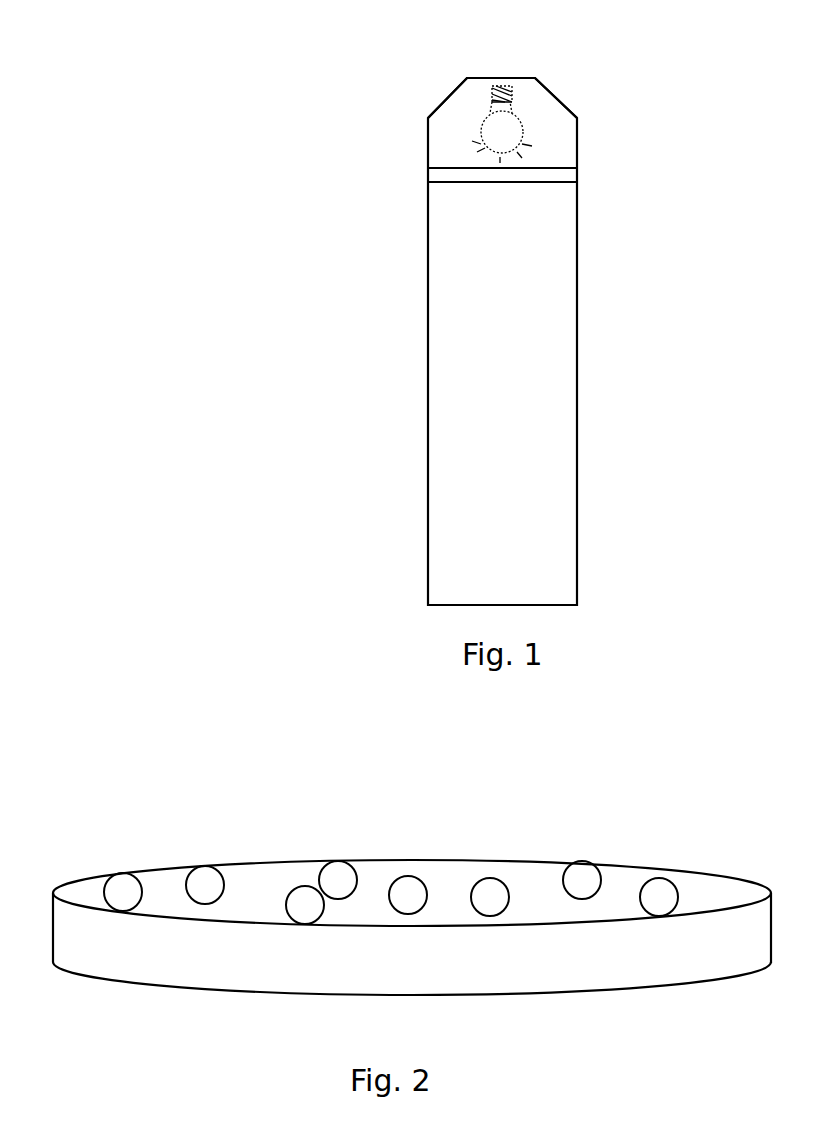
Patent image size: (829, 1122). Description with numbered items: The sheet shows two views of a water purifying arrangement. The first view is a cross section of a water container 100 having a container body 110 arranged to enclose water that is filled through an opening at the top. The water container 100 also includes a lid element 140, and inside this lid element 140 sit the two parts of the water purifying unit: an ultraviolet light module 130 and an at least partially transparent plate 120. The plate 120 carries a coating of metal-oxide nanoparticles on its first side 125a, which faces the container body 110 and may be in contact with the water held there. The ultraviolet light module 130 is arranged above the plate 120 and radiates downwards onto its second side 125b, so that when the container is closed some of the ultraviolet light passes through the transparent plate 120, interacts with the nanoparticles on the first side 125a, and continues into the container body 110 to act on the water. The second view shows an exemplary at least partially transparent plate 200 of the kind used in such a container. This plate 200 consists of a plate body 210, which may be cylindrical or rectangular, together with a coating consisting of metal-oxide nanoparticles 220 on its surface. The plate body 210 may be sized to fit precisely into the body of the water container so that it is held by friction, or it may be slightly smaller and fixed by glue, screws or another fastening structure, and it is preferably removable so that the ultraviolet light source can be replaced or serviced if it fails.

In FIG. 1, the water container 100 is at (356, 198).
In FIG. 1, the container body 110 is at (427, 260).
In FIG. 1, the at least partially transparent plate 120 is at (570, 175).
In FIG. 1, the first side 125a is at (540, 183).
In FIG. 1, the second side 125b is at (428, 166).
In FIG. 1, the ultraviolet light module 130 is at (500, 122).
In FIG. 1, the lid element 140 is at (448, 93).
In FIG. 2, the at least partially transparent plate 200 is at (186, 748).
In FIG. 2, the plate body 210 is at (145, 937).
In FIG. 2, the metal-oxide nanoparticles 220 is at (200, 878).